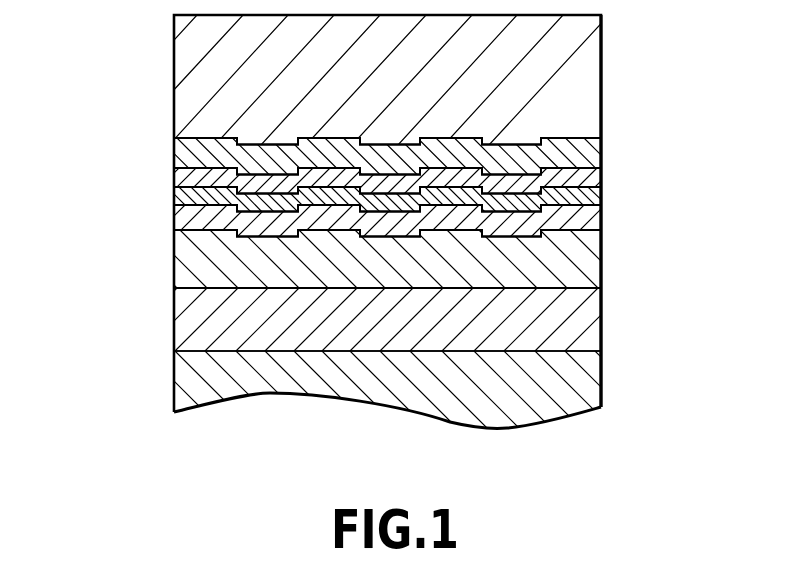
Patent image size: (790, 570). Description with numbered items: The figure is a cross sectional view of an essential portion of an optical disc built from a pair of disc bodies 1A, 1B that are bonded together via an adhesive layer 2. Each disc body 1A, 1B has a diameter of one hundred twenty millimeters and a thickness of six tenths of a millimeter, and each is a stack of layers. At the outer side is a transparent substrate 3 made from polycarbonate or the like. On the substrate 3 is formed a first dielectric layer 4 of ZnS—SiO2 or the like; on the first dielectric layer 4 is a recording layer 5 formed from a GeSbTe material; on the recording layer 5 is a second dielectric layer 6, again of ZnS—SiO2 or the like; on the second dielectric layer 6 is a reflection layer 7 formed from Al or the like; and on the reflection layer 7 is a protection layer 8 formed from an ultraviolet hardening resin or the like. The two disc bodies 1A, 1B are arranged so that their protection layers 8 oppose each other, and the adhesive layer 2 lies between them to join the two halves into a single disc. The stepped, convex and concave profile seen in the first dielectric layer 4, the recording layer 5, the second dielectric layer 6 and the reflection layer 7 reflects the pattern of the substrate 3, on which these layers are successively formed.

The disc body 1A is at (377, 151).
The disc body 1B is at (367, 359).
The adhesive layer 2 is at (602, 312).
The transparent substrate 3 is at (590, 62).
The first dielectric layer 4 is at (590, 147).
The recording layer 5 is at (590, 175).
The second dielectric layer 6 is at (590, 197).
The reflection layer 7 is at (590, 215).
The protection layer 8 is at (602, 260).